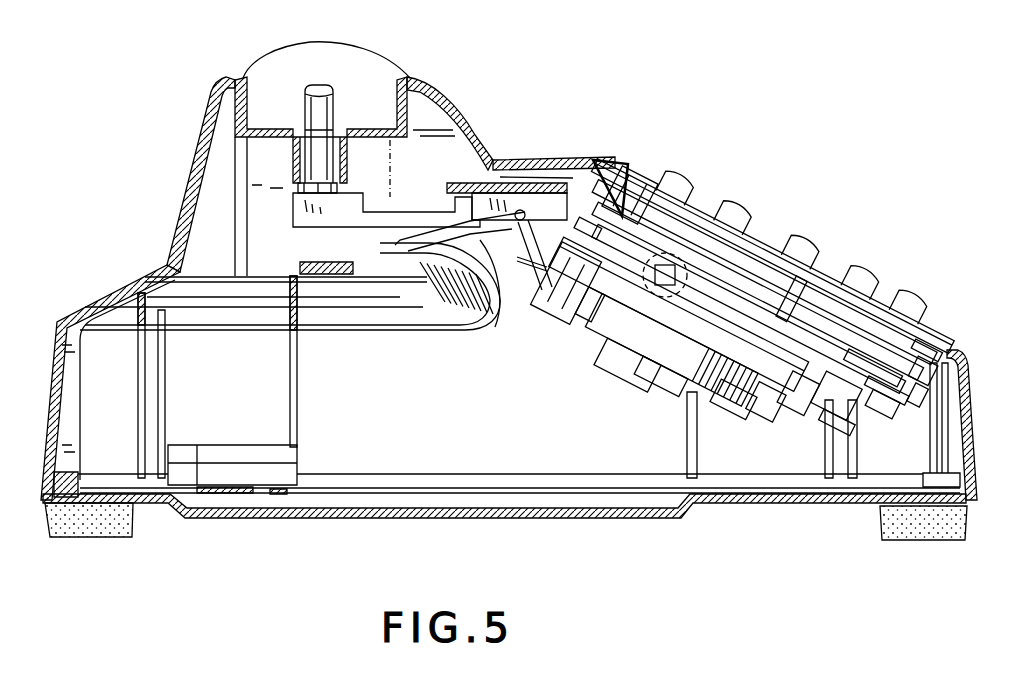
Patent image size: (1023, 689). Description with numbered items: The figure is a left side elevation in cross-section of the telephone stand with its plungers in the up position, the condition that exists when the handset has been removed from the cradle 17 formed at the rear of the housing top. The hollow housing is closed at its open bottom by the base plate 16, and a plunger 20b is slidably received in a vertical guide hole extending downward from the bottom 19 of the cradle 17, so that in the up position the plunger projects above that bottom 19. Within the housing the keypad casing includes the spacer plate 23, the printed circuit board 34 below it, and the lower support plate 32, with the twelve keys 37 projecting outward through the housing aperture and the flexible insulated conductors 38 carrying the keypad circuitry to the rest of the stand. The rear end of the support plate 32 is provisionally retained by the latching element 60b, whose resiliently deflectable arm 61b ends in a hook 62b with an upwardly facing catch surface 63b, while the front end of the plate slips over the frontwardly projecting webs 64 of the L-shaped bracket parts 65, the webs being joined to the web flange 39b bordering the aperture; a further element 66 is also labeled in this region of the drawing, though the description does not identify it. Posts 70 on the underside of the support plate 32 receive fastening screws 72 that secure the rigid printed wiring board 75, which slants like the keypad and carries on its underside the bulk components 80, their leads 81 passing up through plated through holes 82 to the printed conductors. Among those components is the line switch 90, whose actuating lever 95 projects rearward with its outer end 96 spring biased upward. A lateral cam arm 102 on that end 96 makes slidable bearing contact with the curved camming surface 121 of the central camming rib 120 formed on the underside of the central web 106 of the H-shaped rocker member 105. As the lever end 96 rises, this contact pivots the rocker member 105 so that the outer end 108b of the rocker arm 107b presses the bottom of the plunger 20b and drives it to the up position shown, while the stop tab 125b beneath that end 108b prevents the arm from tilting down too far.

The base plate 16 is at (524, 512).
The cradle 17 is at (305, 54).
The bottom of cradle 19 is at (270, 128).
The plunger 20b is at (324, 86).
The spacer plate 23 is at (850, 345).
The lower support plate 32 is at (942, 347).
The printed circuit board 34 is at (875, 350).
The keys 37 is at (740, 225).
The flexible insulated conductors 38 is at (915, 350).
The web flange 39b is at (744, 318).
The latching element 60b is at (700, 197).
The resiliently deflectable arm 61b is at (632, 173).
The hook 62b is at (670, 330).
The catch surface 63b is at (673, 188).
The webs 64 is at (870, 420).
The L-shaped bracket parts 65 is at (907, 398).
The contact 66 is at (905, 382).
The projecting posts 70 is at (897, 337).
The fastening screws 72 is at (525, 288).
The printed wiring board 75 is at (644, 392).
The bulk components 80 is at (600, 335).
The leads 81 is at (808, 355).
The plated through holes 82 is at (757, 410).
The line switch 90 is at (566, 310).
The actuating lever 95 is at (492, 297).
The outer end of lever 96 is at (444, 247).
The cam arm 102 is at (554, 249).
The rocker member 105 is at (598, 158).
The central web 106 is at (528, 160).
The rocker arm 107b is at (407, 191).
The outer end of rocker arm 108b is at (296, 212).
The central camming rib 120 is at (494, 183).
The camming surface 121 is at (395, 245).
The stop tab 125b is at (335, 285).